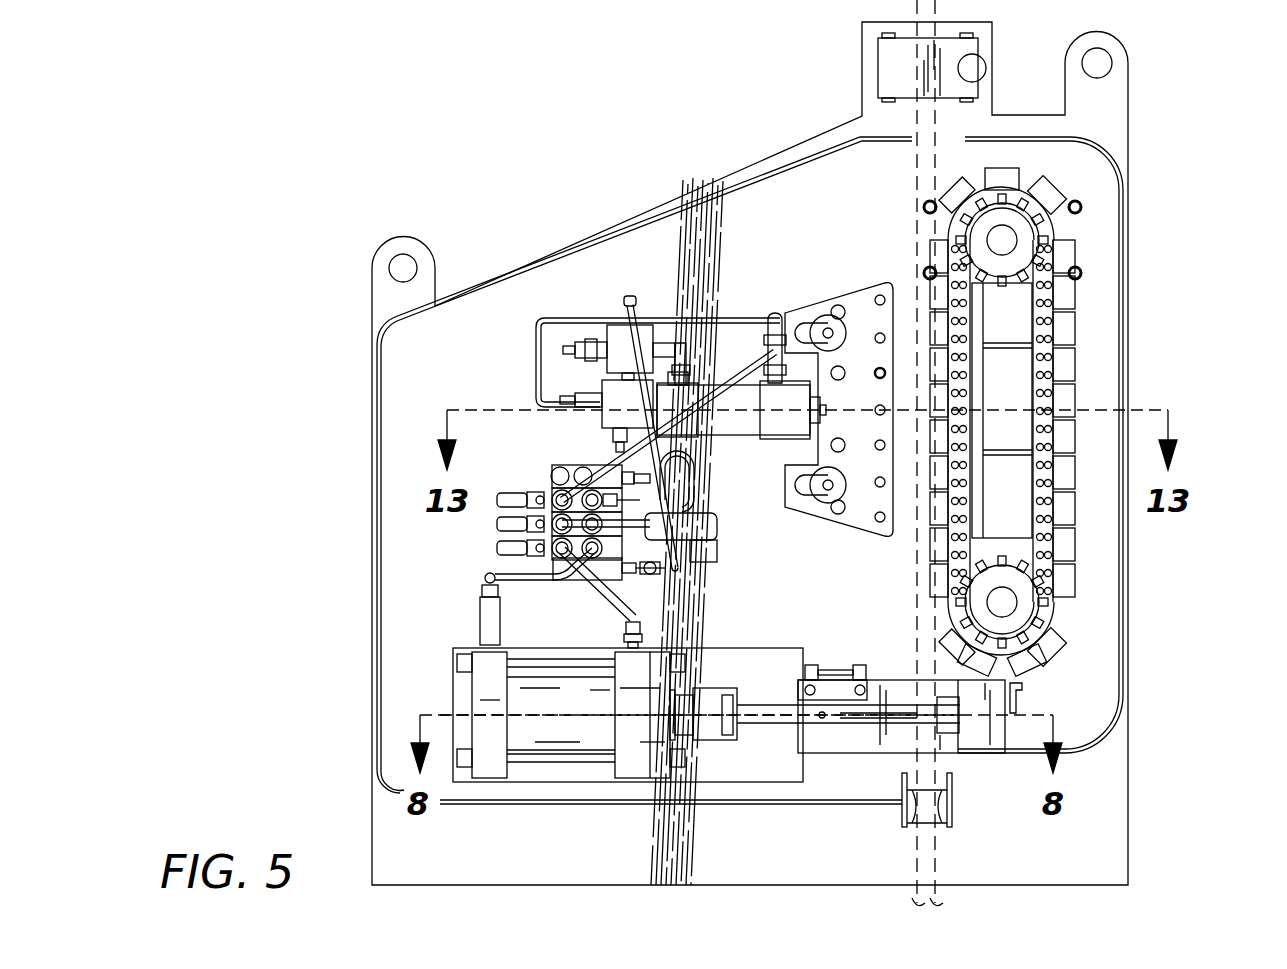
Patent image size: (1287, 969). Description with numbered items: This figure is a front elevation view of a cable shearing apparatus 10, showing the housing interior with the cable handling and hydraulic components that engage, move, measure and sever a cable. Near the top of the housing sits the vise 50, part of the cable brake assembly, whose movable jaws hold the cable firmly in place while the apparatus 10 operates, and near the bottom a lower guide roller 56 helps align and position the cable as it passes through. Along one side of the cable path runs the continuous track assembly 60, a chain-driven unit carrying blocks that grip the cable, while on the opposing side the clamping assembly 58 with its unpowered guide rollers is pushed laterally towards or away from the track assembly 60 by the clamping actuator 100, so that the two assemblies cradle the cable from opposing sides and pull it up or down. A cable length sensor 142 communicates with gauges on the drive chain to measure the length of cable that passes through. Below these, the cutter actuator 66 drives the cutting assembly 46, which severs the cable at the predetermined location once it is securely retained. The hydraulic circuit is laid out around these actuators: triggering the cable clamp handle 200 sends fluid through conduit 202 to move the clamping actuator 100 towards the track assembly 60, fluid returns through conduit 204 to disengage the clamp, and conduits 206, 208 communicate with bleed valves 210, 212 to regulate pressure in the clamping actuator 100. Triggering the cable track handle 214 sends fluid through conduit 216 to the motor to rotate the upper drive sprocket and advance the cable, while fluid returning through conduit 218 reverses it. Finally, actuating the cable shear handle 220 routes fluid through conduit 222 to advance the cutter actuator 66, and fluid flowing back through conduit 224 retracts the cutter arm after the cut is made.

The cable shearing apparatus 10 is at (492, 127).
The cutting assembly 46 is at (845, 772).
The vise 50 is at (892, 64).
The lower guide roller 56 is at (927, 817).
The clamping assembly 58 is at (812, 263).
The continuous track assembly 60 is at (1100, 312).
The cutter actuator 66 is at (535, 748).
The clamping actuator 100 is at (740, 420).
The cable length sensor 142 is at (1023, 688).
The cable clamp handle 200 is at (497, 500).
The conduit 202 is at (660, 317).
The conduit 204 is at (738, 377).
The conduit 206 is at (617, 340).
The conduit 208 is at (690, 492).
The bleed valve 210 is at (627, 320).
The bleed valve 212 is at (617, 393).
The cable track handle 214 is at (497, 523).
The conduit 216 is at (690, 527).
The conduit 218 is at (680, 515).
The cable shear handle 220 is at (497, 547).
The conduit 222 is at (617, 607).
The conduit 224 is at (520, 578).